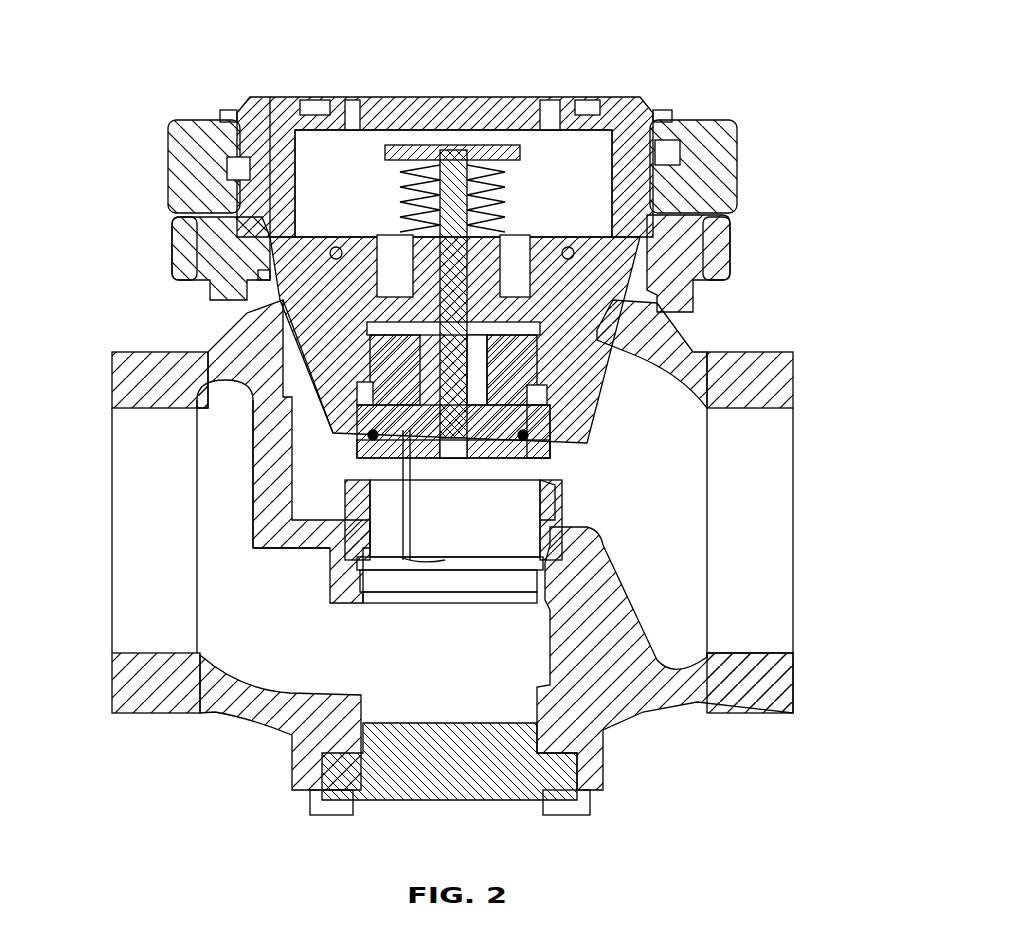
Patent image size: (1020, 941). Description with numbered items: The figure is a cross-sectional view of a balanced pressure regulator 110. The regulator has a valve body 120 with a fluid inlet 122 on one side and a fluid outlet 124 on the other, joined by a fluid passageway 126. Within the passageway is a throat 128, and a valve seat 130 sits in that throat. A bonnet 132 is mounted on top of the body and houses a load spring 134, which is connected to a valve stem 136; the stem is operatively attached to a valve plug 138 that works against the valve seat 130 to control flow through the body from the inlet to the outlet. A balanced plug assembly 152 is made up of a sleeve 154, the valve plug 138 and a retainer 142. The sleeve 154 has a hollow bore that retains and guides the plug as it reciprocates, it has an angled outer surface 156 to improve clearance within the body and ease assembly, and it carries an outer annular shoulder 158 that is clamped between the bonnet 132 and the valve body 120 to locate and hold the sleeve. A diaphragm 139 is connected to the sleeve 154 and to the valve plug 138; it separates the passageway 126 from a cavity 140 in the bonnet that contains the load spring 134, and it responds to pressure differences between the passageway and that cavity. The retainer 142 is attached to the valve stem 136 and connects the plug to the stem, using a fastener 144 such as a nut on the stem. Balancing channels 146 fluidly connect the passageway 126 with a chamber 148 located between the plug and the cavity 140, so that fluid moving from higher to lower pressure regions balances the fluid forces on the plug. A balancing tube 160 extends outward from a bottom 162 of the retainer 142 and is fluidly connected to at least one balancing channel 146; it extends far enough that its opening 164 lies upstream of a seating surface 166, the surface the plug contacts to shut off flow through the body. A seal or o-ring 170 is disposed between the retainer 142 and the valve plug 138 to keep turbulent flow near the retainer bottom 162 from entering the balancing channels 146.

The balanced pressure regulator 110 is at (765, 45).
The valve body 120 is at (450, 557).
The fluid inlet 122 is at (112, 528).
The fluid outlet 124 is at (760, 524).
The fluid passageway 126 is at (496, 574).
The throat 128 is at (455, 622).
The valve seat 130 is at (355, 500).
The bonnet 132 is at (210, 295).
The load spring 134 is at (535, 185).
The valve stem 136 is at (500, 200).
The valve plug 138 is at (525, 339).
The diaphragm 139 is at (555, 388).
The cavity 140 is at (315, 158).
The retainer 142 is at (500, 462).
The fastener 144 is at (465, 462).
The balancing channel 146 is at (290, 268).
The chamber 148 is at (405, 230).
The balanced plug assembly 152 is at (300, 409).
The sleeve 154 is at (300, 350).
The angled outer surface 156 is at (292, 578).
The outer annular shoulder 158 is at (265, 330).
The balancing tube 160 is at (412, 515).
The bottom of the retainer 162 is at (414, 455).
The opening 164 is at (470, 557).
The seating surface 166 is at (548, 492).
The seal or o-ring 170 is at (565, 430).